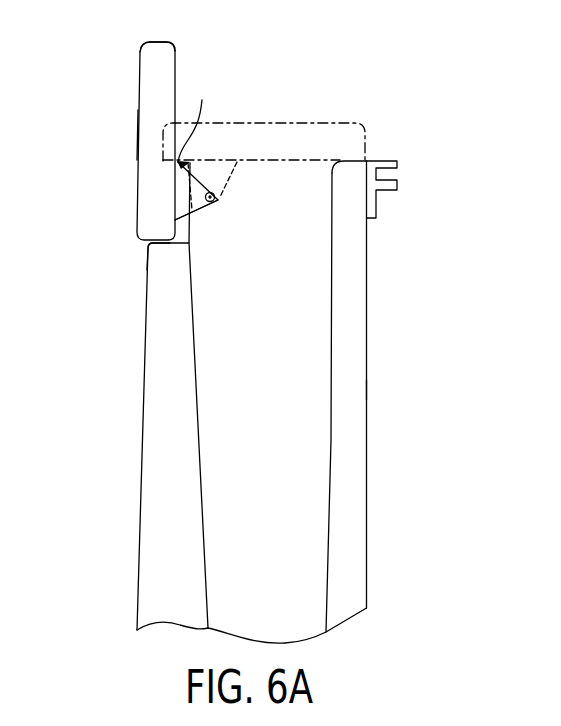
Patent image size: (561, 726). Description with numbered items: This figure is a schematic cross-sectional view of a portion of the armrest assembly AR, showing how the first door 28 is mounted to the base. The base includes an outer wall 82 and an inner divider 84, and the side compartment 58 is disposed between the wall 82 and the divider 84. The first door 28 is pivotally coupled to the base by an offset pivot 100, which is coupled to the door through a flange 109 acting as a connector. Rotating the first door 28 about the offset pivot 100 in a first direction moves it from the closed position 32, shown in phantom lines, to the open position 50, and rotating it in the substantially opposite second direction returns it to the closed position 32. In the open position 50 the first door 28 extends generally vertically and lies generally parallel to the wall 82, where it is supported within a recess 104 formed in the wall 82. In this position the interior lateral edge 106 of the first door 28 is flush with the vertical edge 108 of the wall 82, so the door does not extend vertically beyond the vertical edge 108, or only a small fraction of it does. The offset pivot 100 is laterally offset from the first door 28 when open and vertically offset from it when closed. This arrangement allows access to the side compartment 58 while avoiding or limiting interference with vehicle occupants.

The open position 50 is at (121, 61).
The interior lateral edge 106 is at (158, 42).
The first door 28 is at (137, 135).
The recess 104 is at (148, 246).
The vertical edge 108 is at (199, 118).
The offset pivot 100 is at (218, 200).
The flange 109 is at (200, 214).
The side compartment 58 is at (273, 399).
The wall 82 is at (142, 446).
The divider 84 is at (367, 382).
The closed position 32 is at (394, 97).
The armrest assembly AR is at (320, 66).